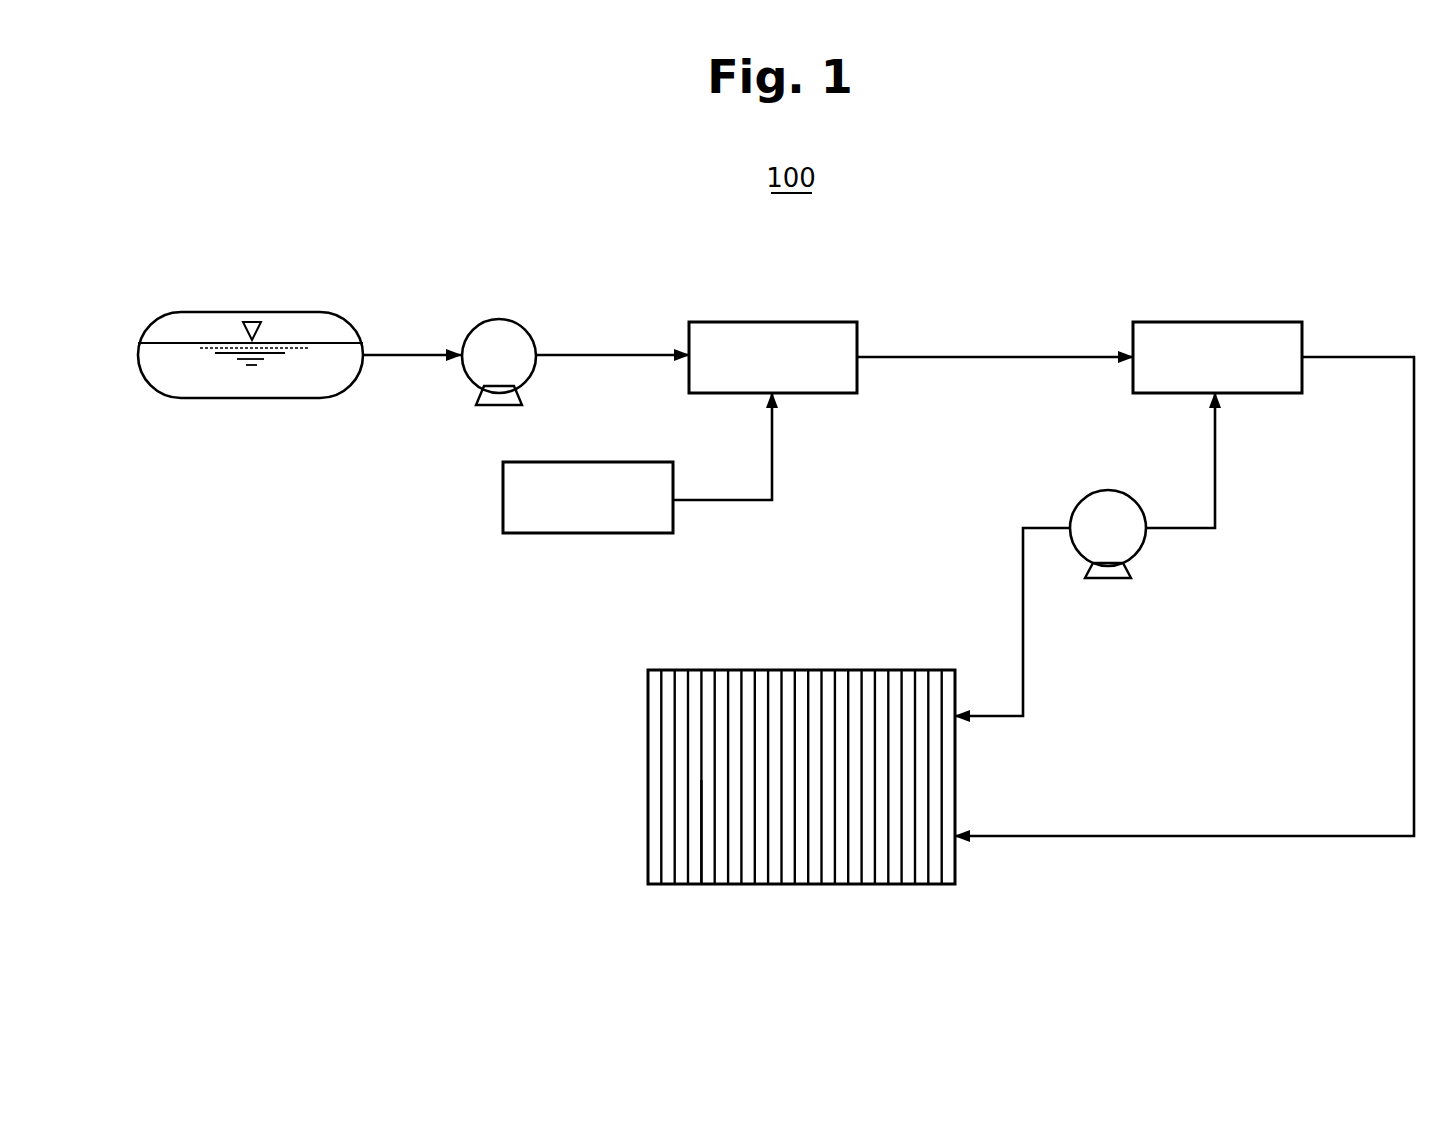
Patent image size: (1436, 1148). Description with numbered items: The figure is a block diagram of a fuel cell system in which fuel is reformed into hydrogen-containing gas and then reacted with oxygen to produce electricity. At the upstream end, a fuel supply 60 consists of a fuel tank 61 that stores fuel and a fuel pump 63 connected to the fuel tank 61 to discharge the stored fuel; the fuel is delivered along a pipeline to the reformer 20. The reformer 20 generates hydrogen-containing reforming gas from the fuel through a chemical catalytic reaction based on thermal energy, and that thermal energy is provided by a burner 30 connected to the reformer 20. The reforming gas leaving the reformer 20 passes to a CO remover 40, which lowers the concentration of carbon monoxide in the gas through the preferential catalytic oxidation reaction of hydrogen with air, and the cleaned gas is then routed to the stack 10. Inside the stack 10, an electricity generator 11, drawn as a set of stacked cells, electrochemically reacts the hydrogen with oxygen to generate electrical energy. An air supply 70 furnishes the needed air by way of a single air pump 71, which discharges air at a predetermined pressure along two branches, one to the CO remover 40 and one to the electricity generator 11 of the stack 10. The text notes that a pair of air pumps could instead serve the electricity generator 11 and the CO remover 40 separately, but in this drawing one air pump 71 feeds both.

The stack 10 is at (856, 658).
The electricity generator 11 is at (707, 882).
The reformer 20 is at (803, 322).
The burner 30 is at (622, 462).
The CO remover 40 is at (1240, 322).
The fuel supply 60 is at (383, 467).
The fuel tank 61 is at (193, 399).
The fuel pump 63 is at (508, 321).
The air supply 70 is at (1152, 556).
The air pump 71 is at (1118, 492).